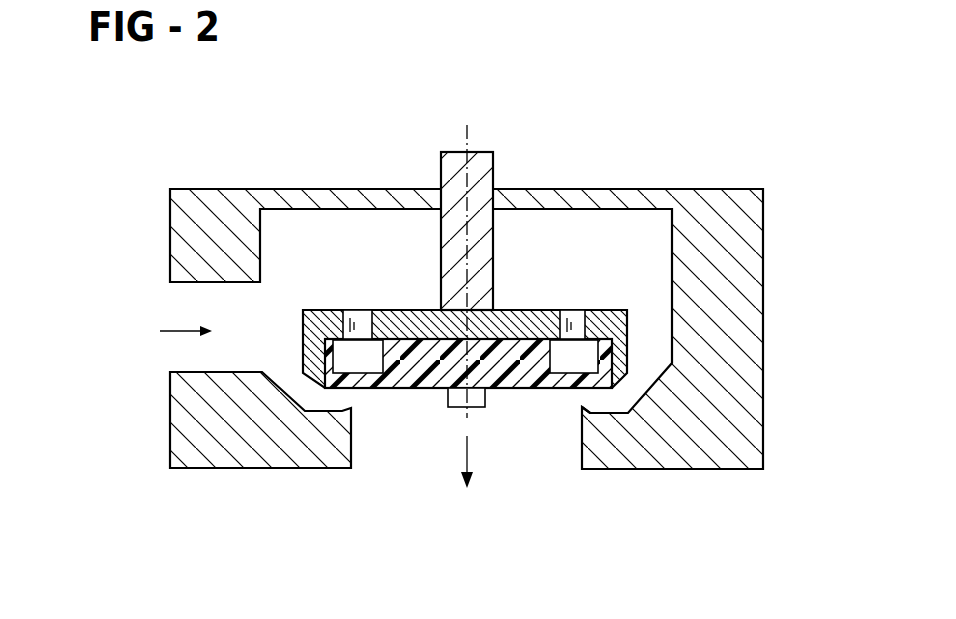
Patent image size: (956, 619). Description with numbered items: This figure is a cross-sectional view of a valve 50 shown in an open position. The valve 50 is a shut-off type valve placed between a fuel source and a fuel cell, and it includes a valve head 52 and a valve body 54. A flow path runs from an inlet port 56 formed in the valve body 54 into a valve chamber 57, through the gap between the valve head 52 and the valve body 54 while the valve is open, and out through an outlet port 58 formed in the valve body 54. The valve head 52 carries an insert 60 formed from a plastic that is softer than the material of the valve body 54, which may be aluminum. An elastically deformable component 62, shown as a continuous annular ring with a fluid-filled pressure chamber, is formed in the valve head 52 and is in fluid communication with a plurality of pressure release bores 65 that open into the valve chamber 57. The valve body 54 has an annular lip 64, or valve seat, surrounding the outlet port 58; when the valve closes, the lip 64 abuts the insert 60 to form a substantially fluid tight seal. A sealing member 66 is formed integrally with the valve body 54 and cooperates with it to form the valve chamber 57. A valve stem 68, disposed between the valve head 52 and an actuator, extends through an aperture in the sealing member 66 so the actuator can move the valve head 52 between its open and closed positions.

The valve 50 is at (692, 132).
The valve head 52 is at (510, 300).
The valve body 54 is at (613, 474).
The inlet port 56 is at (190, 372).
The valve chamber 57 is at (466, 286).
The outlet port 58 is at (352, 438).
The insert 60 is at (412, 389).
The elastically deformable component 62 is at (465, 356).
The annular lip 64 is at (582, 407).
The pressure release bores 65 is at (371, 324).
The sealing member 66 is at (578, 209).
The valve stem 68 is at (441, 227).